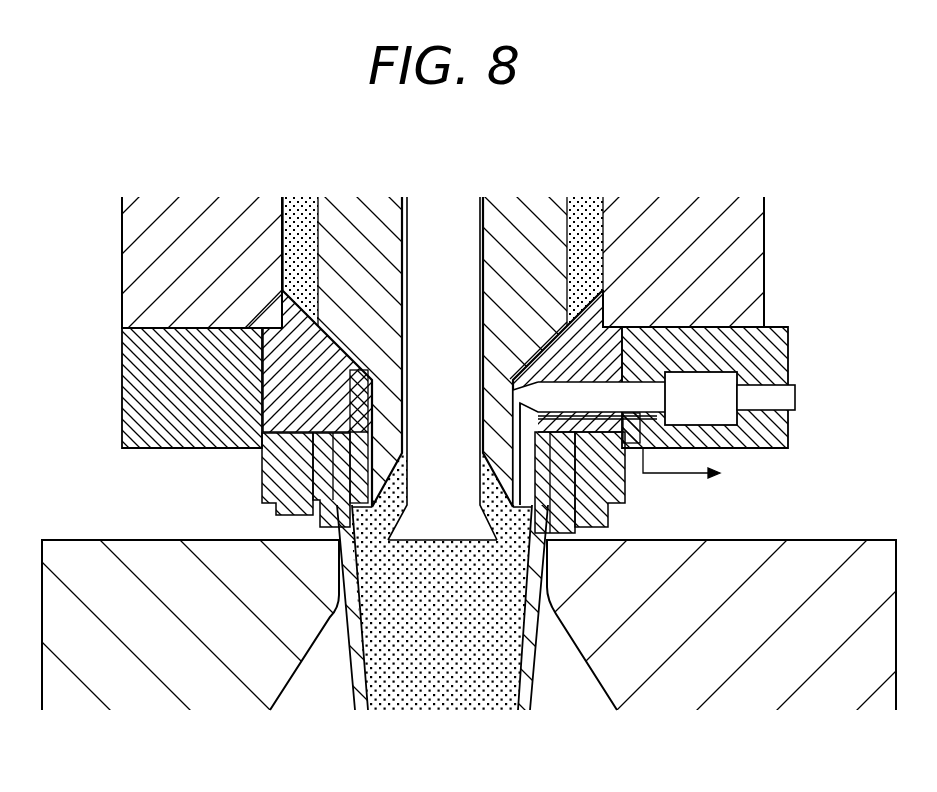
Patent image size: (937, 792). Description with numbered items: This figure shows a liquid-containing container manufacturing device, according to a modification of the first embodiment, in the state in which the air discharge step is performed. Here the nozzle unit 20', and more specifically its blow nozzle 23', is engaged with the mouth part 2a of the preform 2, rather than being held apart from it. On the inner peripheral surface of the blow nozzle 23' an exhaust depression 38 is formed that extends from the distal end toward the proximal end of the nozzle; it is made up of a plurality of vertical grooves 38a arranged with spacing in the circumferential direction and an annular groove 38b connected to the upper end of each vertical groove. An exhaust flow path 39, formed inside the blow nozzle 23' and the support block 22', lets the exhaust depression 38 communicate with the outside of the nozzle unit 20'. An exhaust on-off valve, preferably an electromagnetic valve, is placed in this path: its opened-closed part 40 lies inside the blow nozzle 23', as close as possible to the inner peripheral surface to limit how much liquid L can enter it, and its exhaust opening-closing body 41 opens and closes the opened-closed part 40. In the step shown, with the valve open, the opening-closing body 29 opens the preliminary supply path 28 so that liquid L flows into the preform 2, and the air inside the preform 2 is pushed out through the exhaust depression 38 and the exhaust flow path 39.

The nozzle unit 20' is at (492, 349).
The preliminary supply path 28 is at (400, 230).
The blow nozzle 23' is at (670, 320).
The support block 22' is at (745, 402).
The opened-closed part 40 is at (582, 386).
The exhaust opening-closing body 41 is at (541, 394).
The exhaust flow path 39 is at (607, 403).
The mouth part 2a is at (552, 474).
The exhaust depression 38 is at (252, 408).
The vertical grooves 38a is at (367, 470).
The annular groove 38b is at (367, 383).
The opening-closing body 29 is at (440, 541).
The preform 2 is at (532, 688).
The liquid L is at (467, 620).